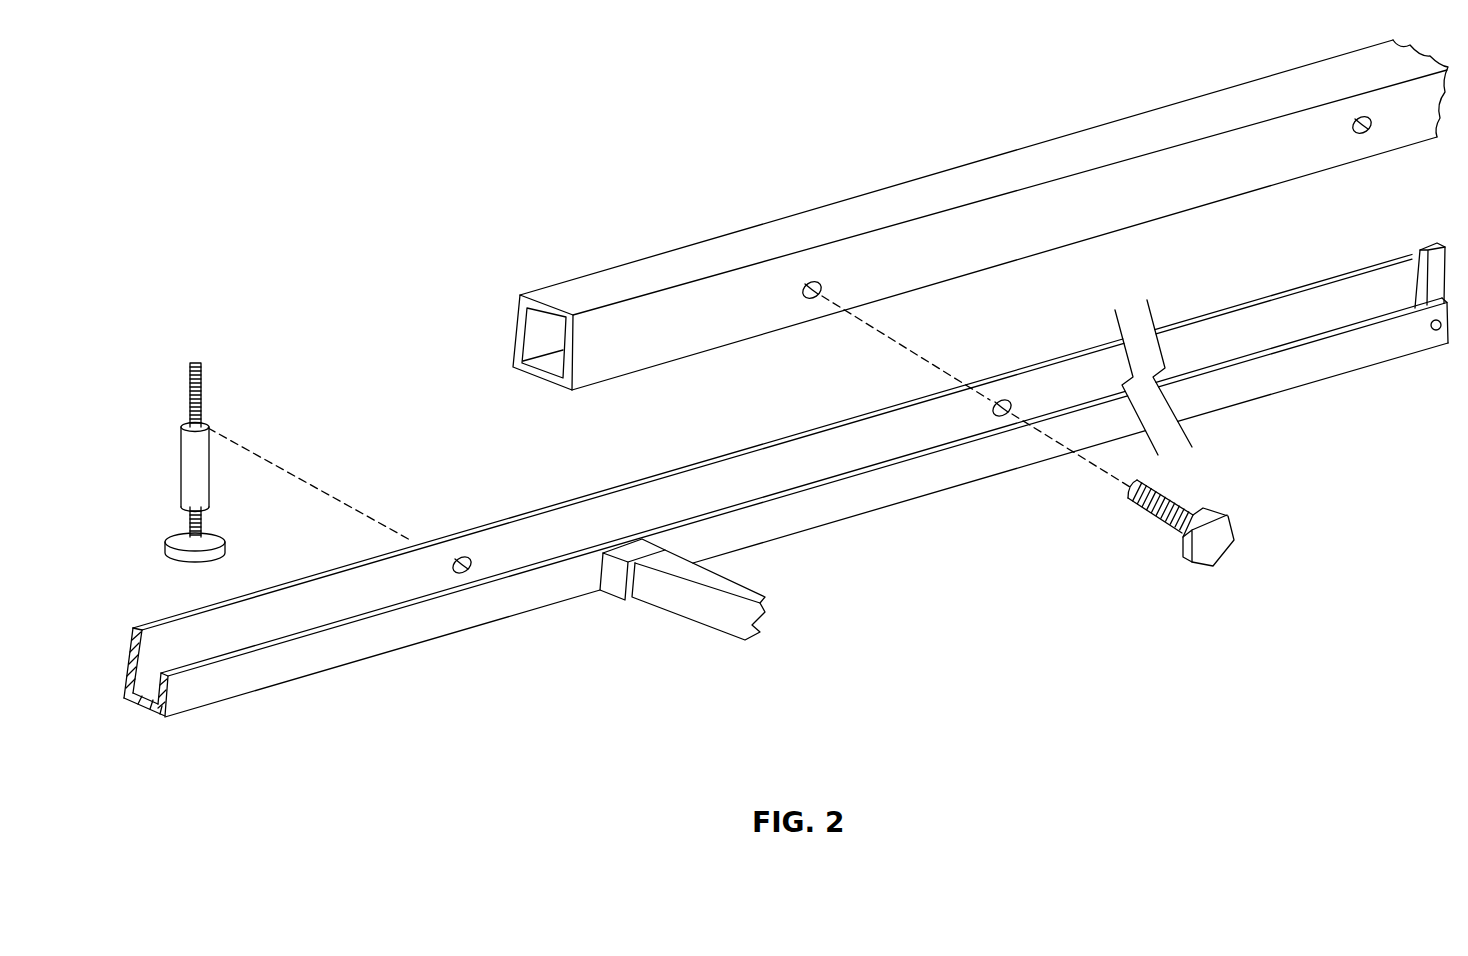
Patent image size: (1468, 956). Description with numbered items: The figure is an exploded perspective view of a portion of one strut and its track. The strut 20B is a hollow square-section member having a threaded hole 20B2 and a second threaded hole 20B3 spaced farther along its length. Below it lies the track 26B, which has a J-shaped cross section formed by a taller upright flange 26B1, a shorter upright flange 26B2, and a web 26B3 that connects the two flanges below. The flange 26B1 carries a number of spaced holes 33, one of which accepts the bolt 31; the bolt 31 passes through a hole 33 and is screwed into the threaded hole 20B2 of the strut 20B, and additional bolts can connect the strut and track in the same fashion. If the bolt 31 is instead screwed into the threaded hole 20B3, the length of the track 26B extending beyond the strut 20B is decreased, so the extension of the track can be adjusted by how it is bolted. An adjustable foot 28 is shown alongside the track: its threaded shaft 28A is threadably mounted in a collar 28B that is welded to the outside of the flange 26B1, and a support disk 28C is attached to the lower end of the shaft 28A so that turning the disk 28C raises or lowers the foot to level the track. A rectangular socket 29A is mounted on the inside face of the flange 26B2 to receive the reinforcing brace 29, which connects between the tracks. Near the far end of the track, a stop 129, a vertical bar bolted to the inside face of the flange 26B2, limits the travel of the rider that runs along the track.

The strut 20B is at (658, 253).
The threaded hole 20B2 is at (814, 297).
The threaded hole 20B3 is at (1360, 135).
The track 26B is at (769, 528).
The upright flange 26B1 is at (683, 465).
The shorter upright flange 26B2 is at (552, 557).
The web 26B3 is at (143, 710).
The spaced holes 33 is at (453, 560).
The stop 129 is at (1425, 247).
The reinforcing brace 29 is at (660, 629).
The rectangular socket 29A is at (607, 593).
The bolt 31 is at (1202, 568).
The adjustable foot 28 is at (248, 461).
The threaded shaft 28A is at (202, 397).
The collar 28B is at (210, 470).
The support disk 28C is at (177, 535).